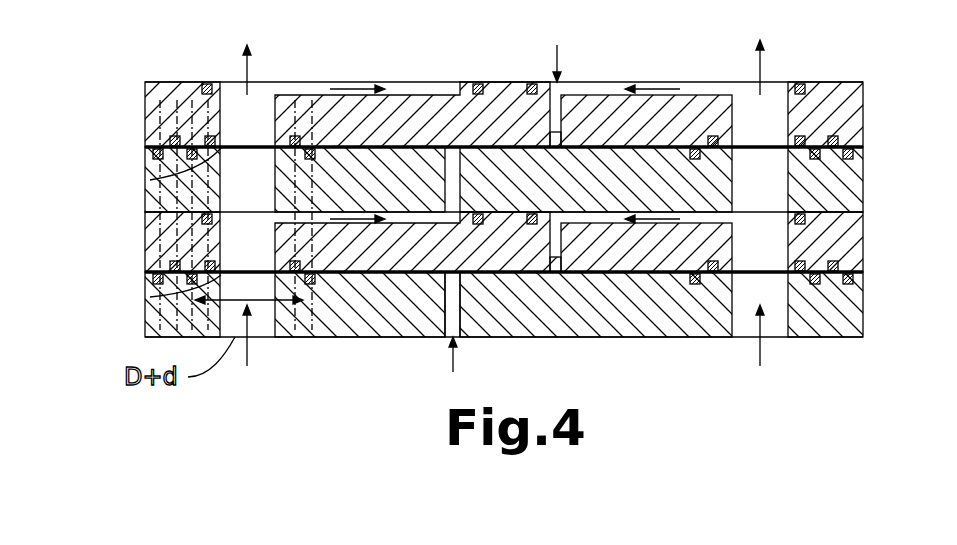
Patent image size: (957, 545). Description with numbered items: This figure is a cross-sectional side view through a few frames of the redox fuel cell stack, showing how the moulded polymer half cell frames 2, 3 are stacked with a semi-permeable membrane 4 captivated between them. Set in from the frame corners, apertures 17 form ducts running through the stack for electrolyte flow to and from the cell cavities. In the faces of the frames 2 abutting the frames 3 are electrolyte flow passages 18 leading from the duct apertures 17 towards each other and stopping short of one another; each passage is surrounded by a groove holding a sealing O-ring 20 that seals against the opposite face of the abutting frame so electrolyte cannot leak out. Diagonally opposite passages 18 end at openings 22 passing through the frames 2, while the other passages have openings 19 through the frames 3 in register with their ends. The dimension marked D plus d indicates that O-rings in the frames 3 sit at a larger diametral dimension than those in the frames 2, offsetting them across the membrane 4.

The half cell frame 2 is at (145, 108).
The half cell frame 3 is at (145, 190).
The semi-permeable membrane 4 is at (150, 180).
The duct aperture 17 is at (262, 337).
The electrolyte flow passage 18 is at (402, 88).
The opening 19 is at (485, 337).
The sealing O-ring 20 is at (207, 83).
The opening 22 is at (578, 82).